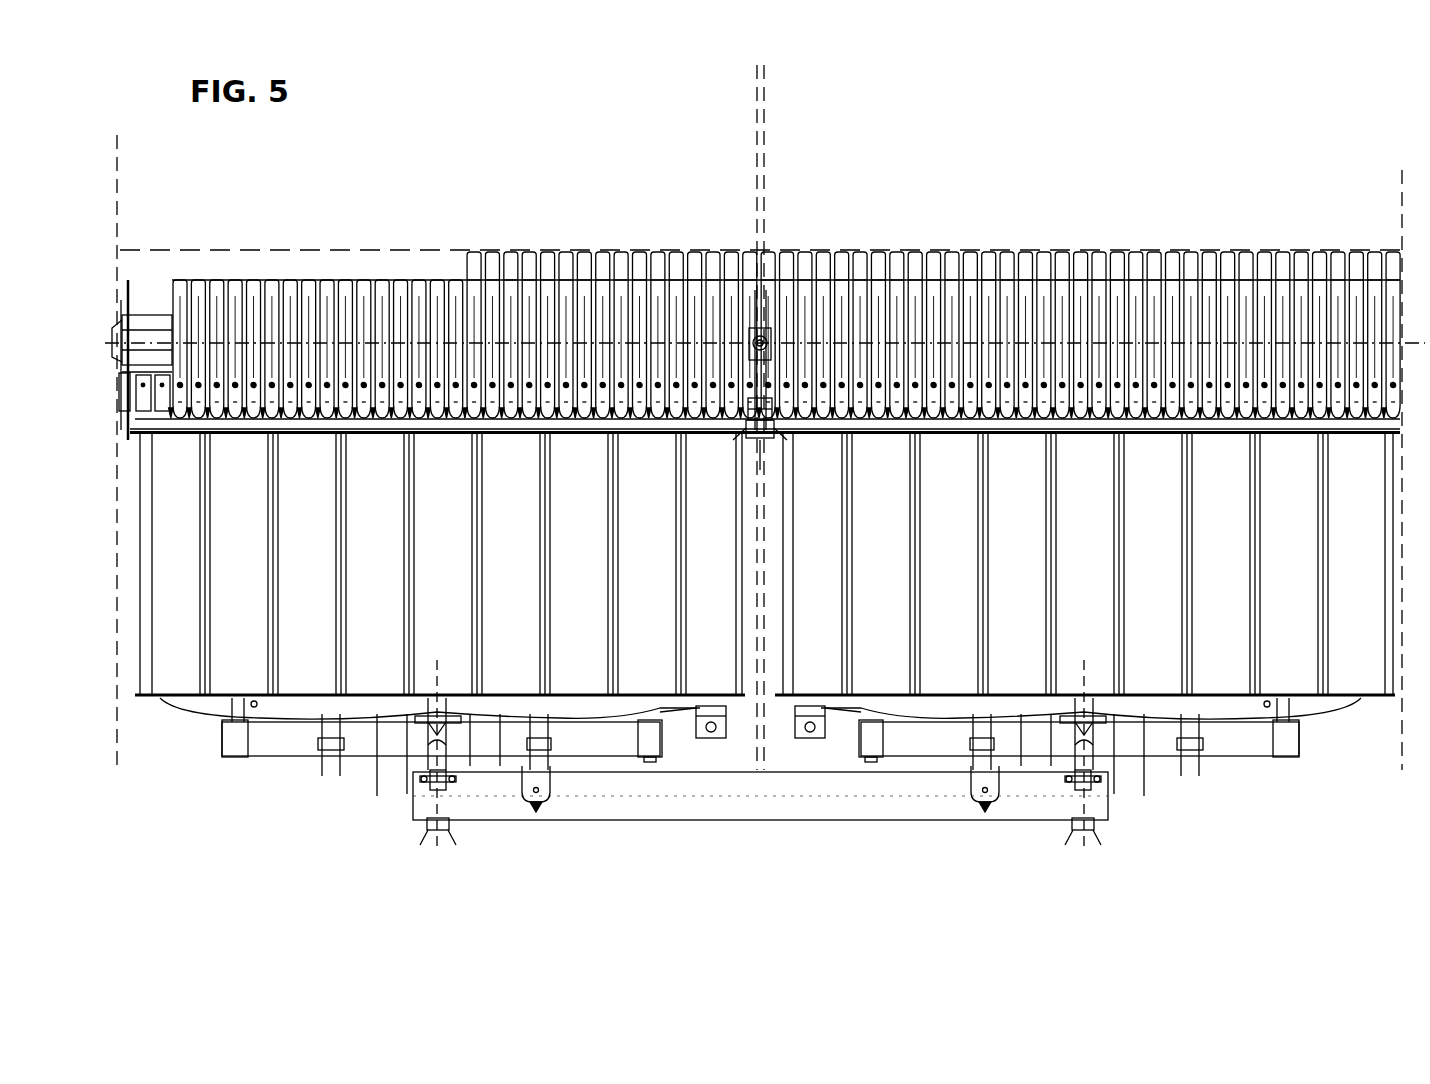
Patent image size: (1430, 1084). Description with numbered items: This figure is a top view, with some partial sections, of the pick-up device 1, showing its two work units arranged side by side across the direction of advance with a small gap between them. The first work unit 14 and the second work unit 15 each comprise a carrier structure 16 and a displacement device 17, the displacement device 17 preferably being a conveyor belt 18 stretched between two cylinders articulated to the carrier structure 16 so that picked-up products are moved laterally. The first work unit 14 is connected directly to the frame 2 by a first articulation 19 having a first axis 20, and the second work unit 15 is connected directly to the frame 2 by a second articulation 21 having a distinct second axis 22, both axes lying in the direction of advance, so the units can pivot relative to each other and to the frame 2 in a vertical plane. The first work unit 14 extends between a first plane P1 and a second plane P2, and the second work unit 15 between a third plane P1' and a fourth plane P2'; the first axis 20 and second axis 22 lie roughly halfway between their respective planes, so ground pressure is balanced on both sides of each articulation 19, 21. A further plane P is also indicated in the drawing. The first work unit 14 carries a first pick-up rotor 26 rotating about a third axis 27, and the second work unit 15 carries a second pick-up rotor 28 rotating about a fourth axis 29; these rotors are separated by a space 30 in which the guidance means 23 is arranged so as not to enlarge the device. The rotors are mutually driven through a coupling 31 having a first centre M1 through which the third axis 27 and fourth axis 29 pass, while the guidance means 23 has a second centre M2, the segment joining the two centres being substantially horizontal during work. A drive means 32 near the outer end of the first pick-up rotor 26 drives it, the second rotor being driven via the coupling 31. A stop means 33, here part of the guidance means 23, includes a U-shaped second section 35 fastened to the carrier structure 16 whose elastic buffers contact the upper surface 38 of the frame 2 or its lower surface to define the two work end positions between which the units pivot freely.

The pick-up device 1 is at (1292, 249).
The frame 2 is at (722, 800).
The first work unit 14 is at (614, 250).
The second work unit 15 is at (856, 250).
The carrier structure 16 is at (282, 742).
The displacement device 17 is at (162, 698).
The conveyor belt 18 is at (262, 662).
The first articulation 19 is at (434, 832).
The first axis 20 is at (440, 792).
The second articulation 21 is at (1080, 832).
The second axis 22 is at (1088, 795).
The guidance means 23 is at (760, 440).
The first pick-up rotor 26 is at (470, 270).
The third axis 27 is at (360, 340).
The second pick-up rotor 28 is at (1110, 262).
The fourth axis 29 is at (1208, 345).
The space 30 is at (765, 332).
The coupling 31 is at (754, 328).
The drive means 32 is at (146, 328).
The stop means 33 is at (536, 812).
The second section 35 is at (540, 792).
The upper surface 38 is at (890, 805).
The first centre M1 is at (774, 400).
The second centre M2 is at (760, 440).
The reference plane P is at (765, 327).
The first plane P1 is at (735, 417).
The third plane P1' is at (786, 417).
The second plane P2 is at (133, 452).
The fourth plane P2' is at (1381, 470).